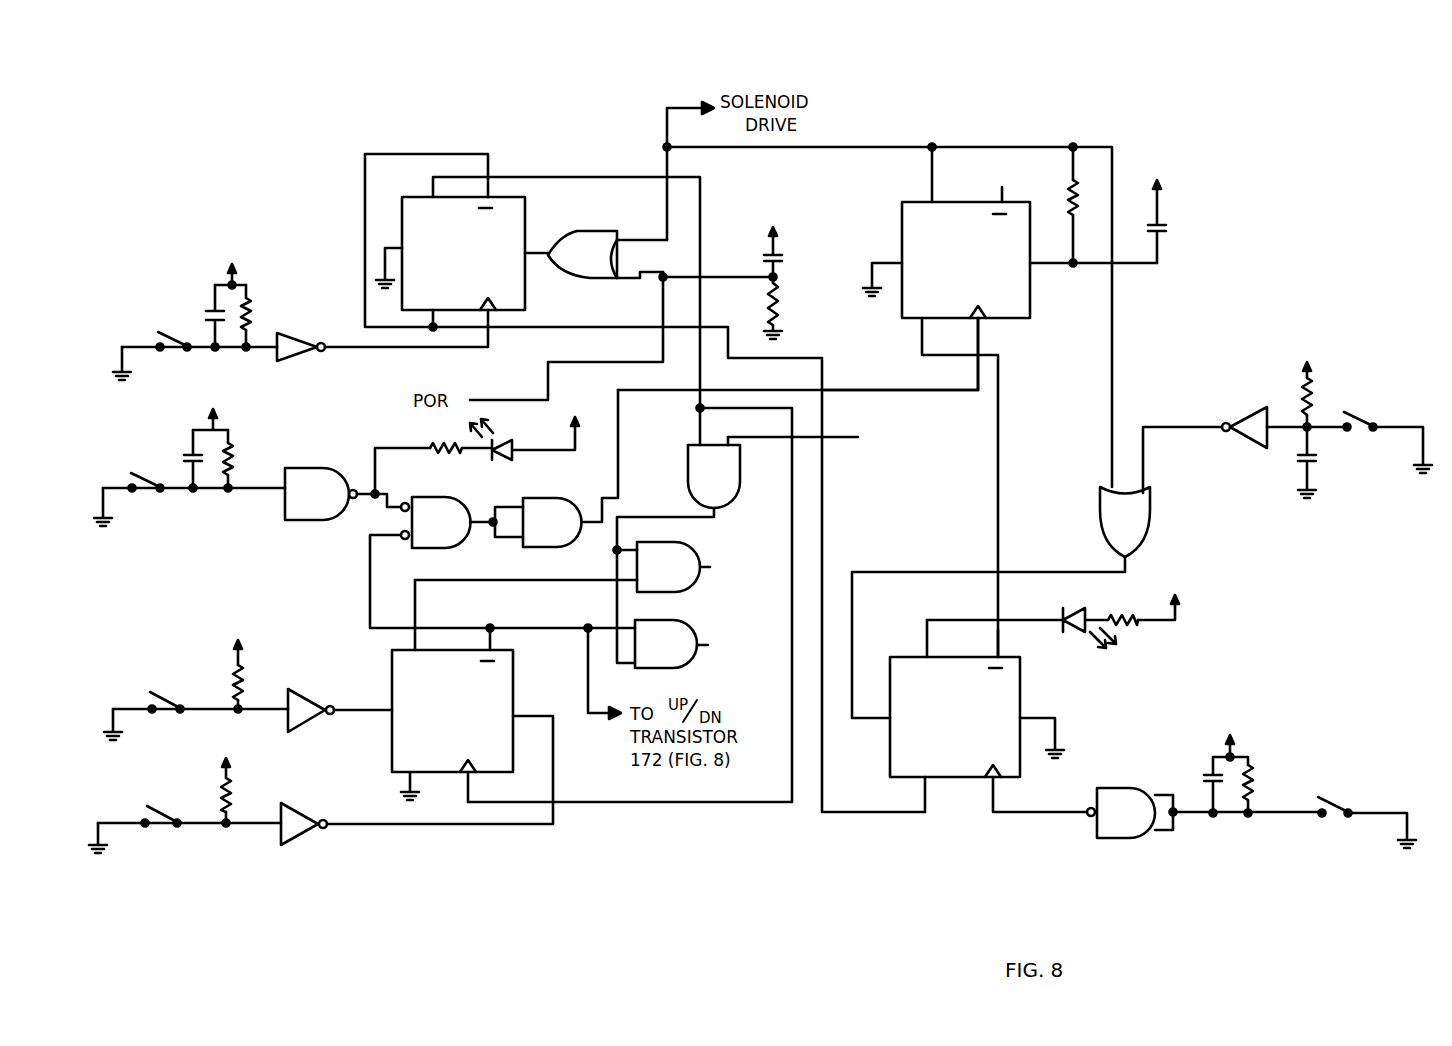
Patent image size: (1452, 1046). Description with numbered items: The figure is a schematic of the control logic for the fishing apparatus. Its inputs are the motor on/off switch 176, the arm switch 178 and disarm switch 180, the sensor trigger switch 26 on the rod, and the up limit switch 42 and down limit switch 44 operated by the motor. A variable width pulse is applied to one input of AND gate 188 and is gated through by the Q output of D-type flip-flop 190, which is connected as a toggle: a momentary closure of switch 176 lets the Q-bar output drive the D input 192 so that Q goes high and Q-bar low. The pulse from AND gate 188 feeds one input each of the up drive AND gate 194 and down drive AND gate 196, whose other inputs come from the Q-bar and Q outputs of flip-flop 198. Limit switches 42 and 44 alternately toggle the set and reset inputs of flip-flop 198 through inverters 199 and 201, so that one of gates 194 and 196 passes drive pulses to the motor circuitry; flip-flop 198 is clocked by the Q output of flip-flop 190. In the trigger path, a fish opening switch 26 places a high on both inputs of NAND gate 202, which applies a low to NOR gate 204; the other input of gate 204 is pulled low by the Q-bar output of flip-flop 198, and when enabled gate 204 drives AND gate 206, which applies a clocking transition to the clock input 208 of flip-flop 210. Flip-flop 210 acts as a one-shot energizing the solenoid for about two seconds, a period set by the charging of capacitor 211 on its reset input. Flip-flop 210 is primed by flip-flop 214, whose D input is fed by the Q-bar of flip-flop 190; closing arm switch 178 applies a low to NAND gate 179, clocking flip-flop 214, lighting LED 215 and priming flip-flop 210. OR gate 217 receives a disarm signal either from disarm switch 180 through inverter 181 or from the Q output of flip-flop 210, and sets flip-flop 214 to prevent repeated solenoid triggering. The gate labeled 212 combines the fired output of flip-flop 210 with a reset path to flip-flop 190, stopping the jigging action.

The motor on/off switch 176 is at (169, 352).
The D input 192 is at (402, 317).
The D-type flip-flop 190 is at (527, 230).
The OR gate 212 is at (600, 231).
The flip-flop 210 is at (902, 228).
The clock input 208 is at (978, 335).
The capacitor 211 is at (1164, 232).
The NAND gate 202 is at (312, 470).
The sensor trigger switch 26 is at (143, 494).
The NOR gate 204 is at (450, 502).
The AND gate 206 is at (535, 502).
The AND gate 188 is at (742, 466).
The down drive AND gate 196 is at (690, 548).
The up drive AND gate 194 is at (683, 624).
The D-type flip-flop 198 is at (515, 689).
The inverter 199 is at (310, 692).
The up limit switch 42 is at (163, 698).
The down limit switch 44 is at (150, 832).
The inverter 201 is at (299, 836).
The OR gate 217 is at (1152, 524).
The inverter 181 is at (1232, 440).
The disarm switch 180 is at (1358, 430).
The LED 215 is at (1078, 612).
The flip-flop 214 is at (957, 787).
The NAND gate 179 is at (1100, 836).
The arm switch 178 is at (1336, 818).